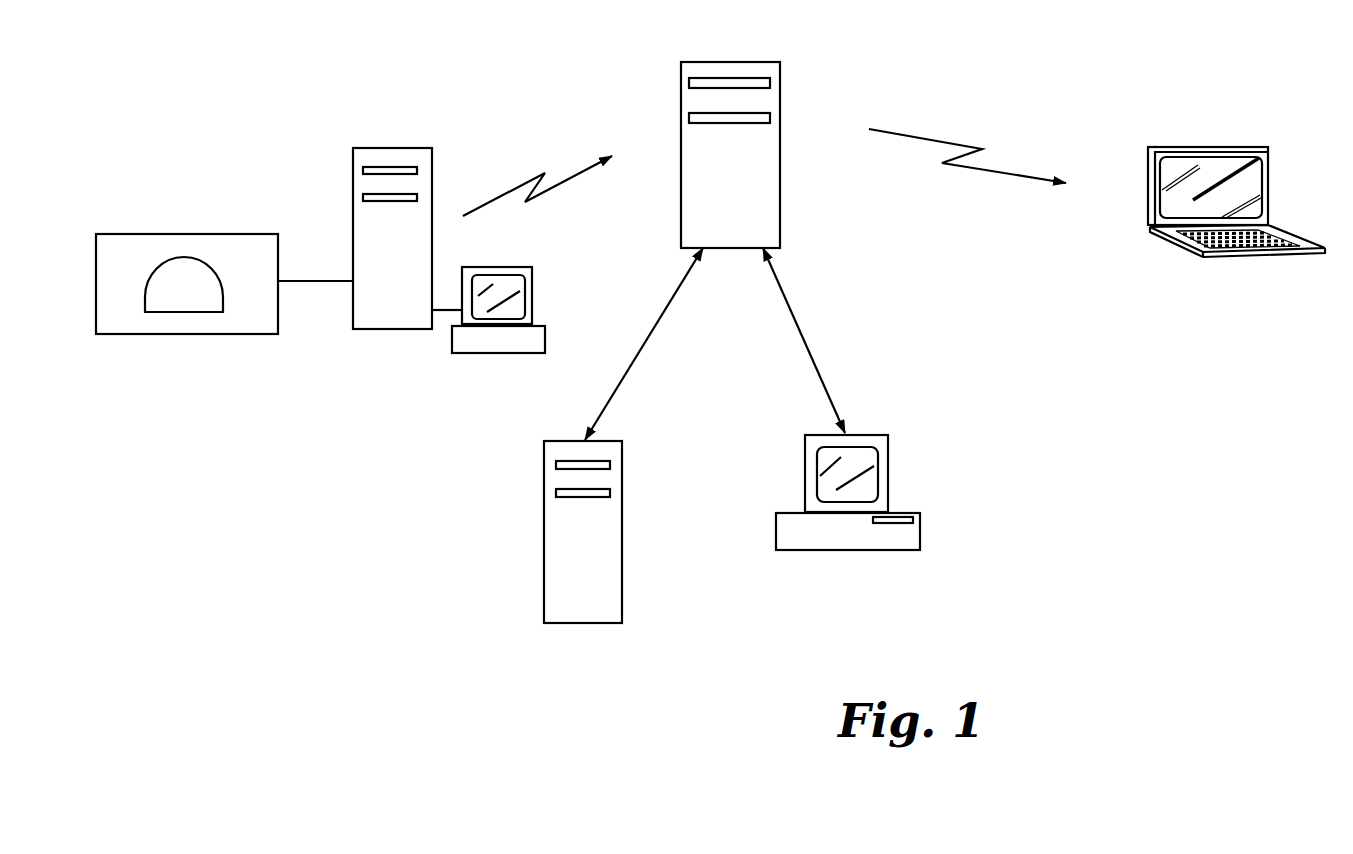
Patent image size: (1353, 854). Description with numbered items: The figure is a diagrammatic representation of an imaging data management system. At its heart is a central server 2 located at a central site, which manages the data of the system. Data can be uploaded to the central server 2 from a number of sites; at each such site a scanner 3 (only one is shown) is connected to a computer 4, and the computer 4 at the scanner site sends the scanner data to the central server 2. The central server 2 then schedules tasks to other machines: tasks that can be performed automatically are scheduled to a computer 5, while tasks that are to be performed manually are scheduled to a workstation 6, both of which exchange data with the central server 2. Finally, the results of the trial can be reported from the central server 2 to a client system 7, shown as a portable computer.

The central server 2 is at (780, 97).
The scanner 3 is at (213, 334).
The computer 4 is at (403, 329).
The computer 5 is at (544, 548).
The workstation 6 is at (920, 531).
The client system 7 is at (1200, 148).